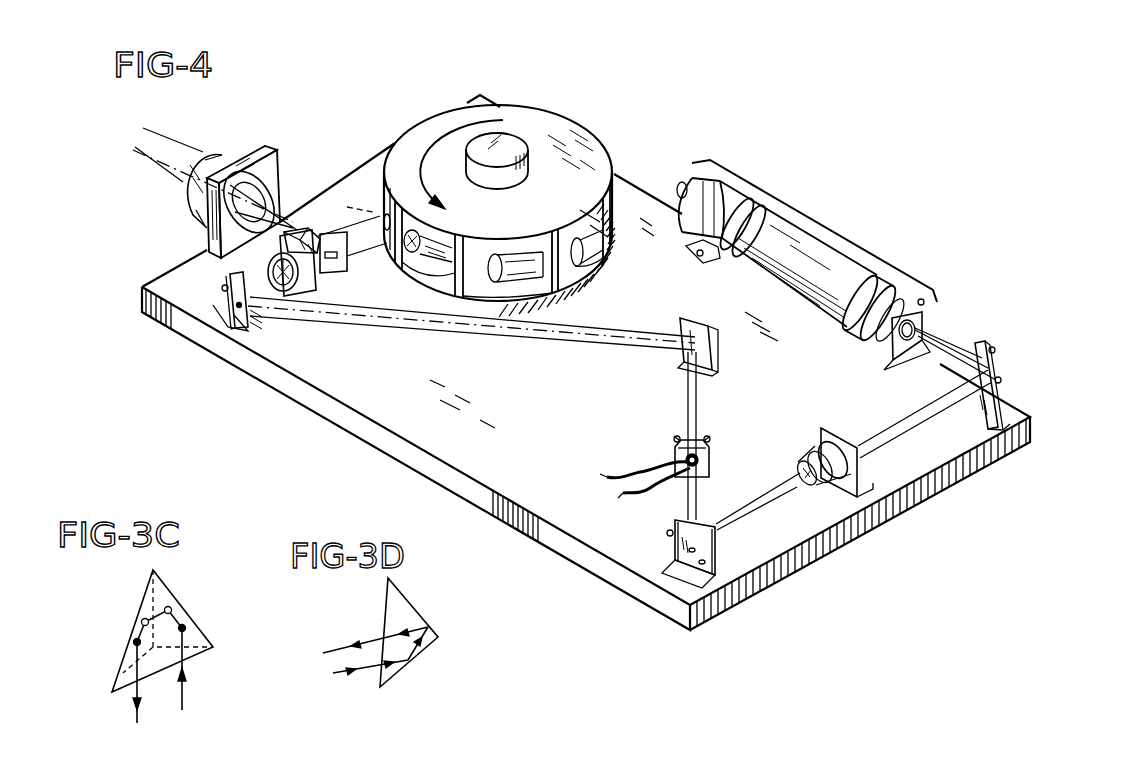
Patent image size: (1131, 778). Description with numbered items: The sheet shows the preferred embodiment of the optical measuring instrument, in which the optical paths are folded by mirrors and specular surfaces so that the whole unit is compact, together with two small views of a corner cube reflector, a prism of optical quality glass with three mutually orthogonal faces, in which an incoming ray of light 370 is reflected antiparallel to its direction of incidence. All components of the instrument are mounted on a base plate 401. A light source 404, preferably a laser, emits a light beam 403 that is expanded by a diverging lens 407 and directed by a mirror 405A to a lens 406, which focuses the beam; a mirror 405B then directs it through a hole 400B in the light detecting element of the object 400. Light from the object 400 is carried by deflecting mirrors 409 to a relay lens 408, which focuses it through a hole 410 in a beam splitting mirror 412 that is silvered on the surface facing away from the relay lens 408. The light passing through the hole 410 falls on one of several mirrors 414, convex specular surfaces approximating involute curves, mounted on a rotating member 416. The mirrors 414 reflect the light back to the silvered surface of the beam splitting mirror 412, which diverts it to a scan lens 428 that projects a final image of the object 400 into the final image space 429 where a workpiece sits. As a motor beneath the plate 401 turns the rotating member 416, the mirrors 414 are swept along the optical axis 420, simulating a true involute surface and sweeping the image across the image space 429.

In FIG. 4, the object 400 is at (680, 434).
In FIG. 4, the hole 400B is at (712, 460).
In FIG. 4, the base plate 401 is at (280, 382).
In FIG. 4, the light beam 403 is at (940, 331).
In FIG. 4, the light source 404 is at (833, 231).
In FIG. 4, the mirror 405A is at (997, 362).
In FIG. 4, the mirror 405B is at (715, 557).
In FIG. 4, the lens 406 is at (833, 450).
In FIG. 4, the diverging lens 407 is at (928, 300).
In FIG. 4, the relay lens 408 is at (296, 293).
In FIG. 4, the deflecting mirrors 409 is at (698, 318).
In FIG. 4, the hole 410 is at (333, 263).
In FIG. 4, the beam splitting mirror 412 is at (327, 236).
In FIG. 4, the mirrors 414 is at (573, 240).
In FIG. 4, the rotating member 416 is at (568, 125).
In FIG. 4, the optical axis 420 is at (350, 197).
In FIG. 4, the scan lens 428 is at (200, 220).
In FIG. 4, the final image space 429 is at (104, 177).
In FIG. 3C, the incoming ray of light 370 is at (183, 663).
In FIG. 3D, the incoming ray of light 370 is at (347, 672).